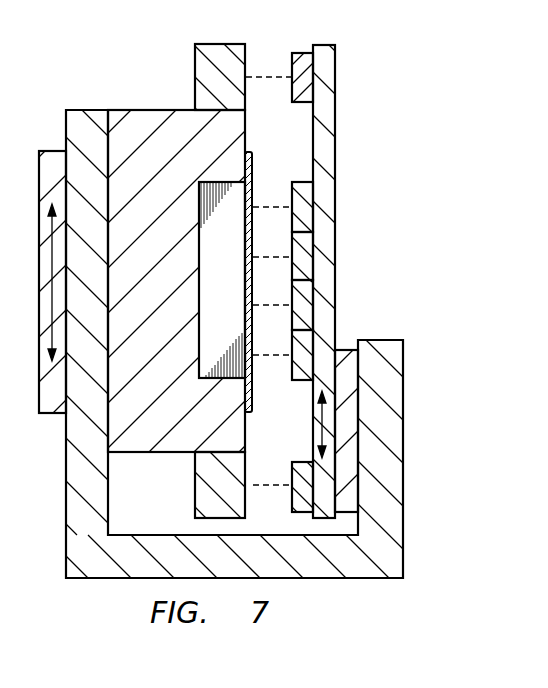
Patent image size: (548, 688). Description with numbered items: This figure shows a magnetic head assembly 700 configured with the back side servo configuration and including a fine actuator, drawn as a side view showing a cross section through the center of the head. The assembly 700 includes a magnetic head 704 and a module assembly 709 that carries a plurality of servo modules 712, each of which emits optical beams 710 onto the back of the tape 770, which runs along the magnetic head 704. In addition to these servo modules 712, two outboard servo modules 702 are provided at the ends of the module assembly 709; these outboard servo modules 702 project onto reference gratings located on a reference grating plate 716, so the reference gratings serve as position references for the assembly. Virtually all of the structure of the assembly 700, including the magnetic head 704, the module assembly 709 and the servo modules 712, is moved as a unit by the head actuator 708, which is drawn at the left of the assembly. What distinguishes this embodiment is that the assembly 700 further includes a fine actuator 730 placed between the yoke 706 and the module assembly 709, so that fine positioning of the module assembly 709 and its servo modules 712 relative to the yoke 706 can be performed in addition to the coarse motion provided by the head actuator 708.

The magnetic head assembly 700 is at (359, 56).
The outboard servo modules 702 is at (296, 55).
The magnetic head 704 is at (155, 115).
The yoke 706 is at (87, 115).
The head actuator 708 is at (50, 414).
The module assembly 709 is at (330, 144).
The optical beams 710 is at (268, 76).
The servo modules 712 is at (305, 193).
The reference grating plate 716 is at (216, 50).
The fine actuator 730 is at (352, 452).
The tape 770 is at (252, 168).